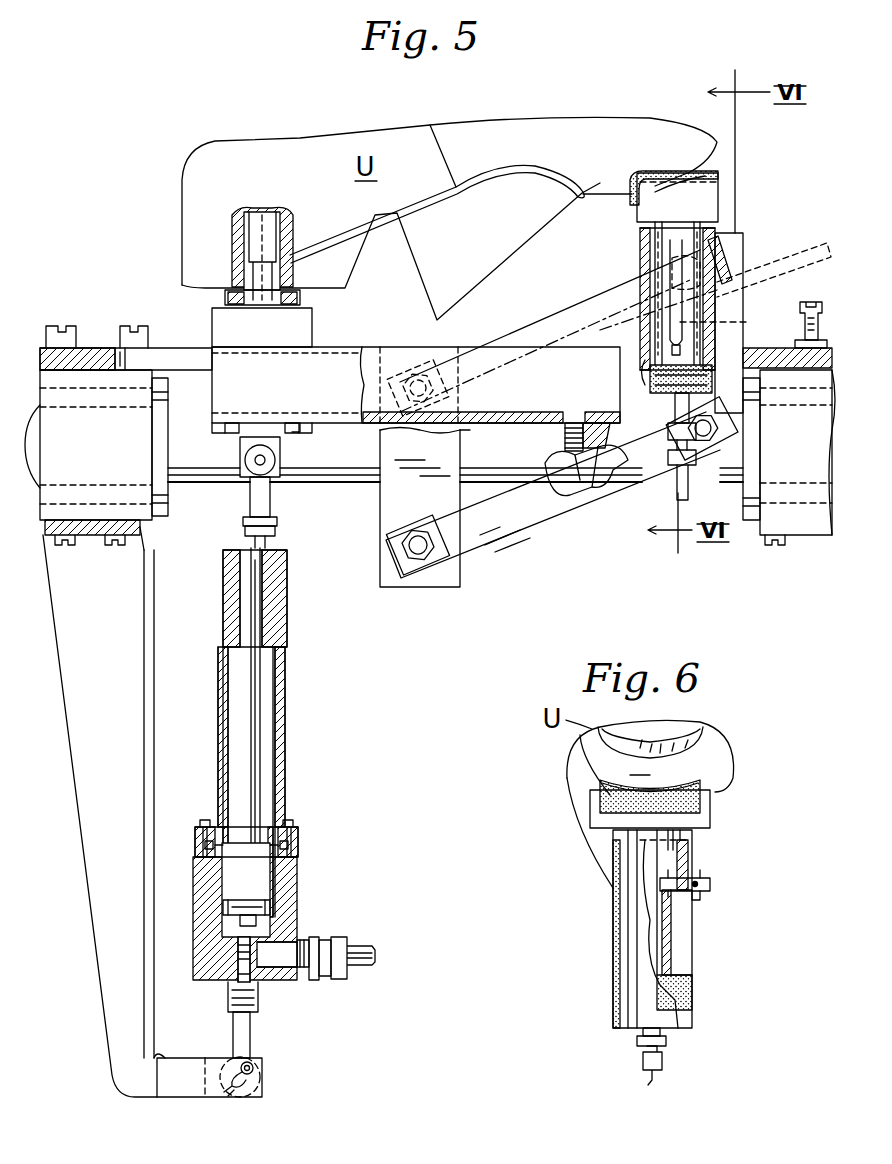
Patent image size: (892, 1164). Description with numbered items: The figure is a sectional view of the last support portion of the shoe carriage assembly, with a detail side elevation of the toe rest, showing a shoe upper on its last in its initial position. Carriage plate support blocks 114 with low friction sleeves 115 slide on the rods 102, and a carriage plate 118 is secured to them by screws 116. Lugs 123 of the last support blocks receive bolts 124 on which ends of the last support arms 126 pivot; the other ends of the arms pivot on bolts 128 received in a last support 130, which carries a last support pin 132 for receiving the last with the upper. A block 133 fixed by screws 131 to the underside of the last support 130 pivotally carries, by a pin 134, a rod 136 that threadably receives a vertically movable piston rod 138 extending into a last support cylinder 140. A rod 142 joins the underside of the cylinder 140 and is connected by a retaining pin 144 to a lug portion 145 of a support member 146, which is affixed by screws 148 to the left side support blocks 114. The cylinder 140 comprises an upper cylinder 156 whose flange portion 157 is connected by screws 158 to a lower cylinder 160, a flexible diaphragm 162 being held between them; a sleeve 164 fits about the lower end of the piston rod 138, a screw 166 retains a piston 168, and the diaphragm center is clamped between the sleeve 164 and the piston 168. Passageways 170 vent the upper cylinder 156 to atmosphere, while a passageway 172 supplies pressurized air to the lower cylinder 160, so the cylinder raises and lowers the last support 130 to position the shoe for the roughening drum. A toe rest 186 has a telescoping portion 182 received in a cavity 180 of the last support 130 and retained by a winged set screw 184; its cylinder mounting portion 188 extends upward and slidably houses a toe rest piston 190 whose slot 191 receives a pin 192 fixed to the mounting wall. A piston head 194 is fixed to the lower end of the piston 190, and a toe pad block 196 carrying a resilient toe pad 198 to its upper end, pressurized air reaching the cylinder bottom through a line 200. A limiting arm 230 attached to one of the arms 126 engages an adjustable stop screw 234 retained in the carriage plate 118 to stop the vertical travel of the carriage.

In FIG. 5, the rod 102 is at (354, 478).
In FIG. 5, the carriage plate support block 114 is at (142, 519).
In FIG. 5, the low friction sleeve 115 is at (166, 488).
In FIG. 5, the screw 116 is at (122, 336).
In FIG. 5, the carriage plate 118 is at (180, 352).
In FIG. 5, the lug 123 is at (732, 238).
In FIG. 5, the bolt 124 is at (735, 255).
In FIG. 5, the last support arm 126 is at (550, 324).
In FIG. 5, the bolt 128 is at (414, 382).
In FIG. 5, the last support 130 is at (333, 346).
In FIG. 5, the screw 131 is at (230, 436).
In FIG. 5, the last support pin 132 is at (279, 230).
In FIG. 5, the block 133 is at (302, 428).
In FIG. 5, the pin 134 is at (266, 460).
In FIG. 5, the rod 136 is at (262, 499).
In FIG. 5, the piston rod 138 is at (272, 546).
In FIG. 5, the last support cylinder 140 is at (288, 621).
In FIG. 5, the rod 142 is at (236, 1037).
In FIG. 5, the retaining pin 144 is at (255, 1077).
In FIG. 5, the lug portion 145 is at (190, 1085).
In FIG. 5, the support member 146 is at (76, 634).
In FIG. 5, the screw 148 is at (112, 547).
In FIG. 5, the upper cylinder 156 is at (287, 659).
In FIG. 5, the flange portion 157 is at (300, 831).
In FIG. 5, the screw 158 is at (206, 821).
In FIG. 5, the lower cylinder 160 is at (299, 876).
In FIG. 5, the flexible diaphragm 162 is at (290, 845).
In FIG. 5, the sleeve 164 is at (262, 792).
In FIG. 5, the screw 166 is at (257, 922).
In FIG. 5, the piston 168 is at (268, 908).
In FIG. 5, the passageway 170 is at (238, 585).
In FIG. 5, the passageway 172 is at (268, 972).
In FIG. 5, the cavity 180 is at (532, 412).
In FIG. 5, the telescoping portion 182 is at (490, 418).
In FIG. 5, the winged set screw 184 is at (600, 494).
In FIG. 5, the toe rest 186 is at (589, 268).
In FIG. 6, the toe rest 186 is at (599, 895).
In FIG. 5, the cylinder mounting portion 188 is at (652, 295).
In FIG. 6, the cylinder mounting portion 188 is at (630, 941).
In FIG. 5, the toe rest piston 190 is at (656, 229).
In FIG. 6, the toe rest piston 190 is at (670, 856).
In FIG. 5, the slot 191 is at (748, 322).
In FIG. 6, the slot 191 is at (672, 921).
In FIG. 5, the pin 192 is at (672, 272).
In FIG. 6, the pin 192 is at (710, 883).
In FIG. 5, the piston head 194 is at (655, 388).
In FIG. 6, the piston head 194 is at (684, 991).
In FIG. 5, the toe pad block 196 is at (646, 207).
In FIG. 6, the toe pad block 196 is at (708, 811).
In FIG. 5, the toe pad 198 is at (681, 174).
In FIG. 6, the toe pad 198 is at (702, 791).
In FIG. 5, the line 200 is at (676, 482).
In FIG. 6, the line 200 is at (654, 1077).
In FIG. 5, the limiting arm 230 is at (813, 243).
In FIG. 5, the adjustable stop screw 234 is at (810, 303).